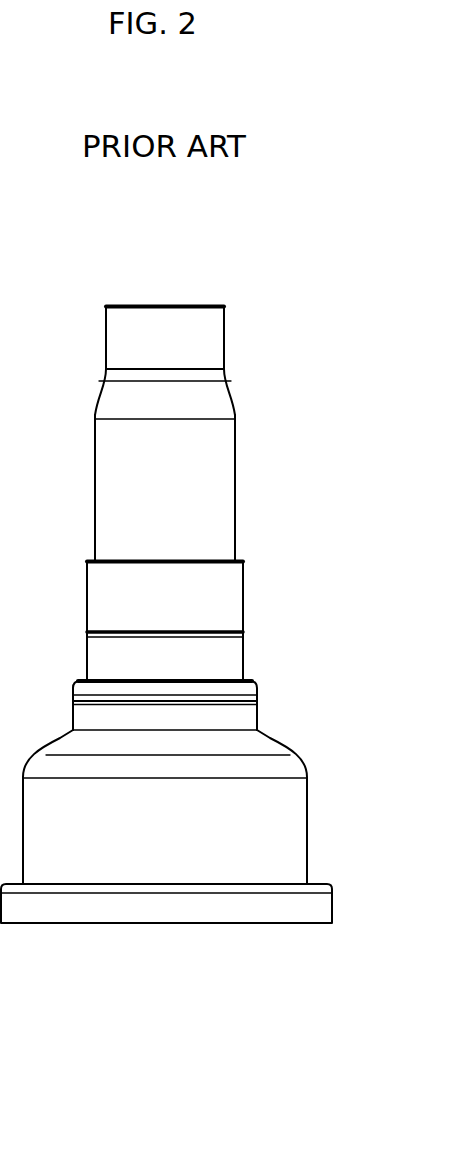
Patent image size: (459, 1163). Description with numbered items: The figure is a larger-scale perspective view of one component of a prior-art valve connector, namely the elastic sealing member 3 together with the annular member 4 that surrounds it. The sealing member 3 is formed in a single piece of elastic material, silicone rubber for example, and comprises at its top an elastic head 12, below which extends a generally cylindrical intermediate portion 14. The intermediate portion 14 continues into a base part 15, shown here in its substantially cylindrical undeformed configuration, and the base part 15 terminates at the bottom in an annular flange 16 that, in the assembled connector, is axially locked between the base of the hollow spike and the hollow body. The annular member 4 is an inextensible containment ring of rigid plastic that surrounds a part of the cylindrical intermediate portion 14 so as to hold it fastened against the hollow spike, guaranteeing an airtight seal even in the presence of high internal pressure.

The elastic head 12 is at (150, 305).
The elastic sealing member 3 is at (258, 455).
The cylindrical intermediate portion 14 is at (105, 502).
The annular member 4 is at (227, 605).
The base part 15 is at (285, 827).
The annular flange 16 is at (158, 907).